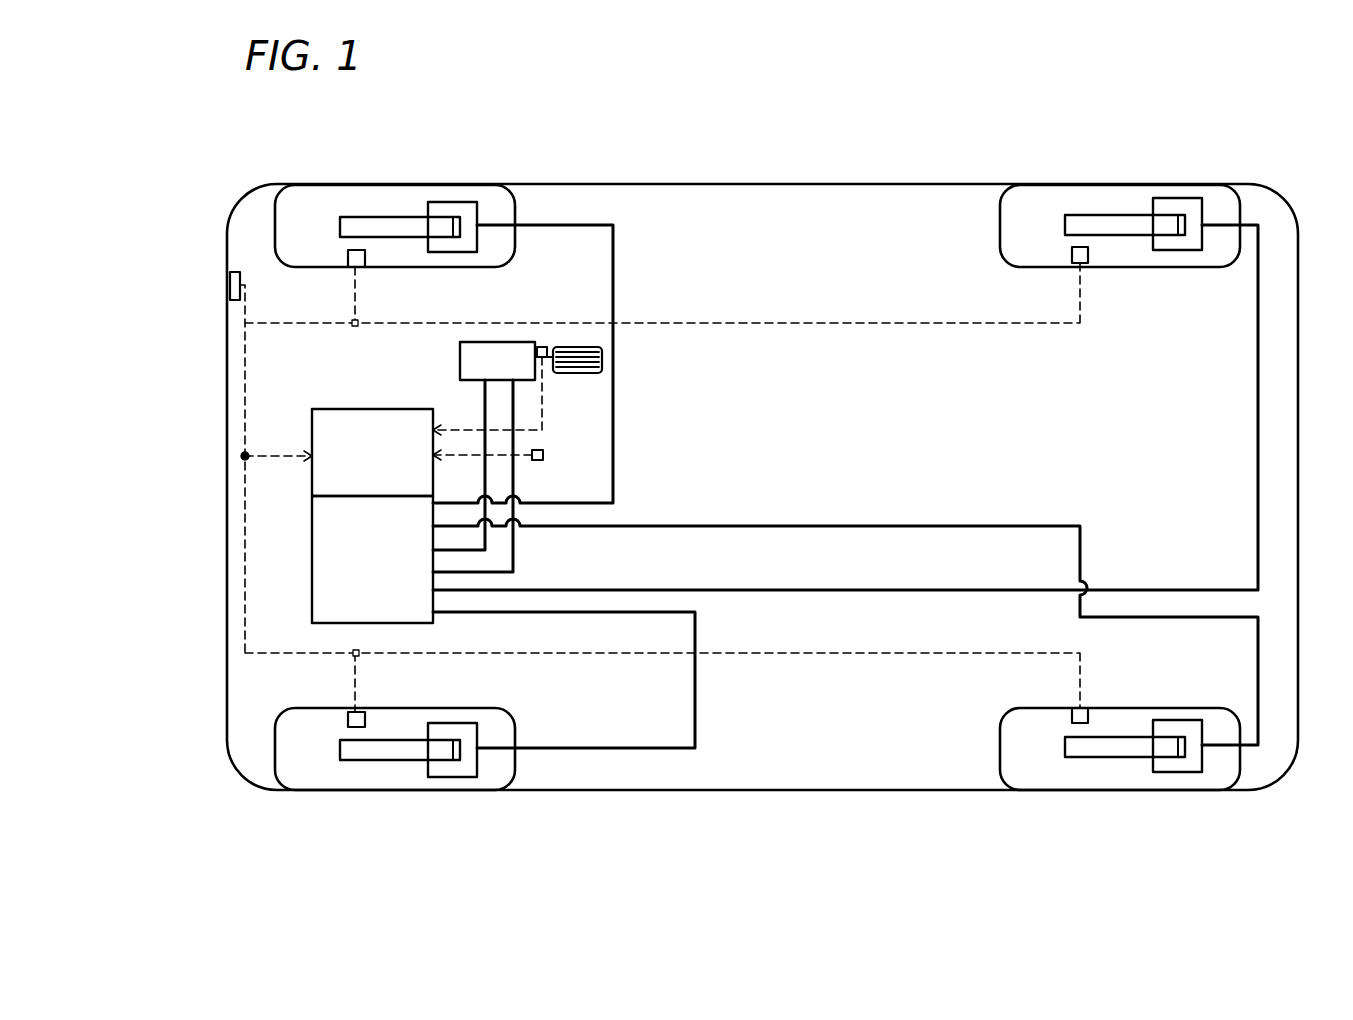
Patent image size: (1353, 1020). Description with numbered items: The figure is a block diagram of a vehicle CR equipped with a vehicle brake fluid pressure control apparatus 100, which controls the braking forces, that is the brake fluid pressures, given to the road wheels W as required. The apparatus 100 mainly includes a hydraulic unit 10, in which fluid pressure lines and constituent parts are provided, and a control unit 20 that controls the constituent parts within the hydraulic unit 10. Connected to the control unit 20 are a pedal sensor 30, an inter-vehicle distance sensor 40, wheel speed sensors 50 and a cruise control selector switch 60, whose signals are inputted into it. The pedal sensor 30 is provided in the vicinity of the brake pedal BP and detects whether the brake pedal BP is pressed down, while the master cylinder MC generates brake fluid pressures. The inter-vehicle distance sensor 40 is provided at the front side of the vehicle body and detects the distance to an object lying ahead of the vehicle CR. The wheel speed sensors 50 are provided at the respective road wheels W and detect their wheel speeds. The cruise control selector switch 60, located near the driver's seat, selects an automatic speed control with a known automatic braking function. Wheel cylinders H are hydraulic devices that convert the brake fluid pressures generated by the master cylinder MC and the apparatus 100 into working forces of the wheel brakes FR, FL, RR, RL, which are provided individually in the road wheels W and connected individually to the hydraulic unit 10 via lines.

The hydraulic unit 10 is at (350, 559).
The control unit 20 is at (318, 433).
The pedal sensor 30 is at (542, 347).
The inter-vehicle distance sensor 40 is at (232, 271).
The wheel speed sensor 50 is at (365, 259).
The cruise control selector switch 60 is at (543, 455).
The vehicle brake fluid pressure control apparatus 100 is at (292, 458).
The vehicle CR is at (787, 172).
The master cylinder MC is at (460, 360).
The brake pedal BP is at (597, 374).
The road wheel W is at (388, 196).
The wheel cylinder H is at (452, 210).
The wheel brake FR is at (355, 222).
The wheel brake FL is at (358, 752).
The wheel brake RR is at (1080, 222).
The wheel brake RL is at (1083, 752).